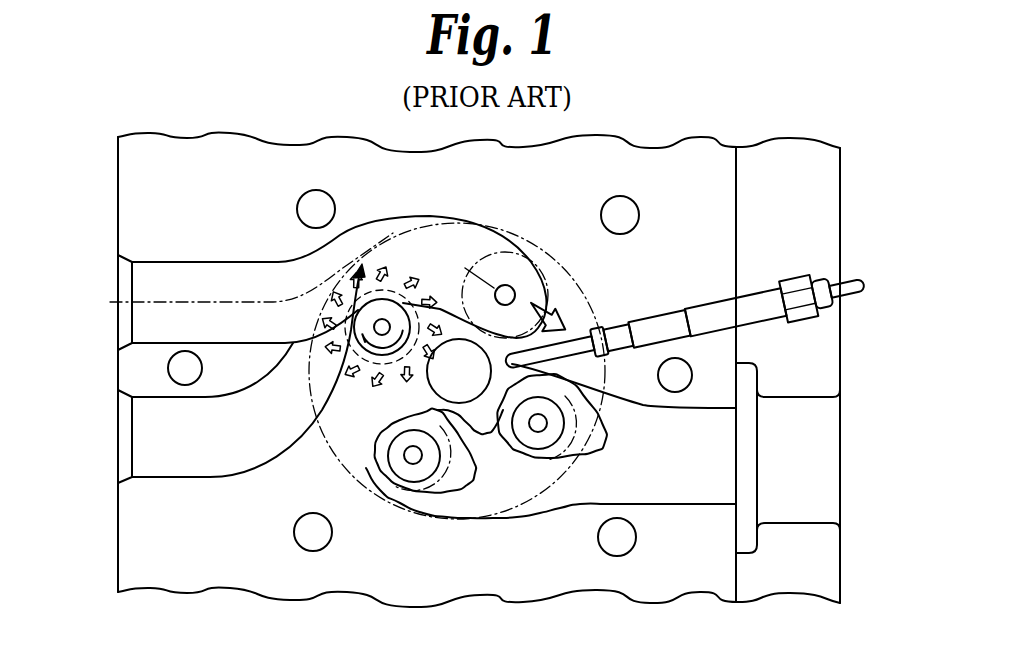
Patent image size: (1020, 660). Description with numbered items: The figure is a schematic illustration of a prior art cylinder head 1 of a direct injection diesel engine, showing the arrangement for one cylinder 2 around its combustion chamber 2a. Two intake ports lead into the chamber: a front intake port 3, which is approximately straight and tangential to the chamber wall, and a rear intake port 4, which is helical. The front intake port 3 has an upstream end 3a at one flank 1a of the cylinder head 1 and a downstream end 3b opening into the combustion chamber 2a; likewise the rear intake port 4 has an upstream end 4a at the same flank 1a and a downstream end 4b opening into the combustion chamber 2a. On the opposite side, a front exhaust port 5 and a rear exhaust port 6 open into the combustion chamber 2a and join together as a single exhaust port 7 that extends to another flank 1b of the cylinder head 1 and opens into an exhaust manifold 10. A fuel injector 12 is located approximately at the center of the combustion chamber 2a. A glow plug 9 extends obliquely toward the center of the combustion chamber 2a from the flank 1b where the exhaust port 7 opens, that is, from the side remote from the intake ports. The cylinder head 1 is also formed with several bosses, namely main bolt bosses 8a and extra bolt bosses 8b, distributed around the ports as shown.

The cylinder head 1 is at (117, 200).
The flank of the cylinder head 1a is at (117, 567).
The flank of the cylinder head 1b is at (740, 162).
The cylinder 2 is at (384, 232).
The combustion chamber 2a is at (585, 298).
The front intake port 3 is at (431, 217).
The upstream end of the front intake port 3a is at (117, 281).
The downstream end of the front intake port 3b is at (527, 264).
The rear intake port 4 is at (329, 400).
The upstream end of the rear intake port 4a is at (117, 468).
The downstream end of the rear intake port 4b is at (418, 302).
The front exhaust port 5 is at (378, 466).
The rear exhaust port 6 is at (512, 450).
The single exhaust port 7 is at (685, 495).
The main bolt bosses 8a is at (297, 208).
The extra bolt bosses 8b is at (168, 368).
The glow plug 9 is at (760, 292).
The exhaust manifold 10 is at (860, 572).
The fuel injector 12 is at (435, 396).